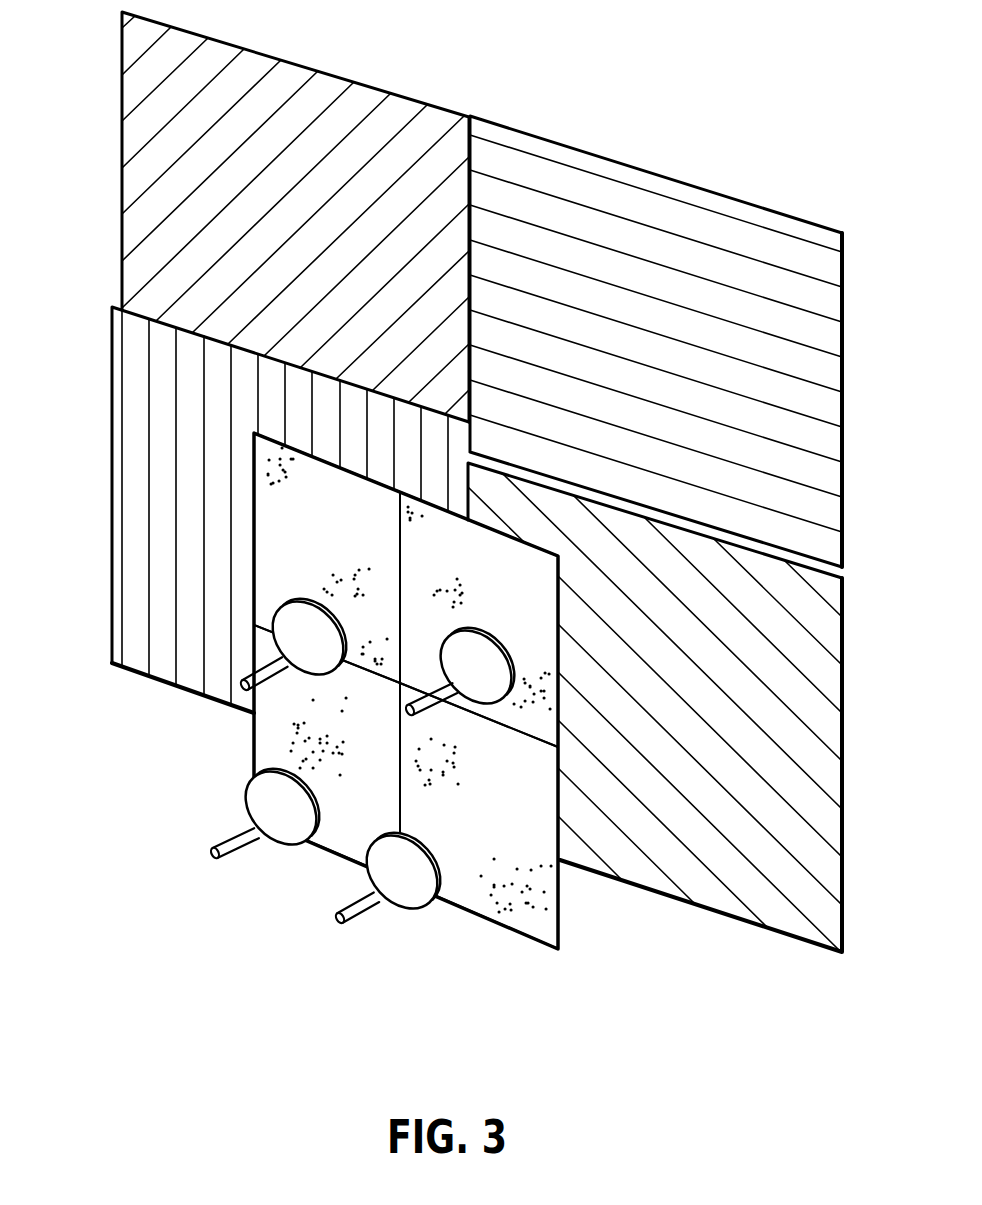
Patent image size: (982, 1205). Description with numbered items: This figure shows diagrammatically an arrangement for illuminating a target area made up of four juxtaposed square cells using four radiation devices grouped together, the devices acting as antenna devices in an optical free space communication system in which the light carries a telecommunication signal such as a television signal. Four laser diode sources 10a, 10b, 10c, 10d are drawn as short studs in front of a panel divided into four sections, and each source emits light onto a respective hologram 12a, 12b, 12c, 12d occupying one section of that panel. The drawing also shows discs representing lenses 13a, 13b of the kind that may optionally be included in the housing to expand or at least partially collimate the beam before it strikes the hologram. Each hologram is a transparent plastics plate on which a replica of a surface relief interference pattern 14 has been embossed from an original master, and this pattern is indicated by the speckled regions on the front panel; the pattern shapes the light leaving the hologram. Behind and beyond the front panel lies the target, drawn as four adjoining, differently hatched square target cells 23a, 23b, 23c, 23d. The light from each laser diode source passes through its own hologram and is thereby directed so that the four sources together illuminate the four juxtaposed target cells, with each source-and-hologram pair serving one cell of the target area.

The laser diode source 10a is at (243, 843).
The laser diode source 10b is at (353, 910).
The laser diode source 10c is at (283, 673).
The laser diode source 10d is at (477, 690).
The hologram 12a is at (377, 815).
The hologram 12b is at (480, 836).
The hologram 12c is at (330, 532).
The hologram 12d is at (542, 600).
The lens 13a is at (270, 803).
The lens 13b is at (403, 897).
The surface relief interference pattern 14 is at (507, 867).
The target cell 23a is at (133, 405).
The target cell 23b is at (807, 745).
The target cell 23c is at (148, 125).
The target cell 23d is at (807, 372).